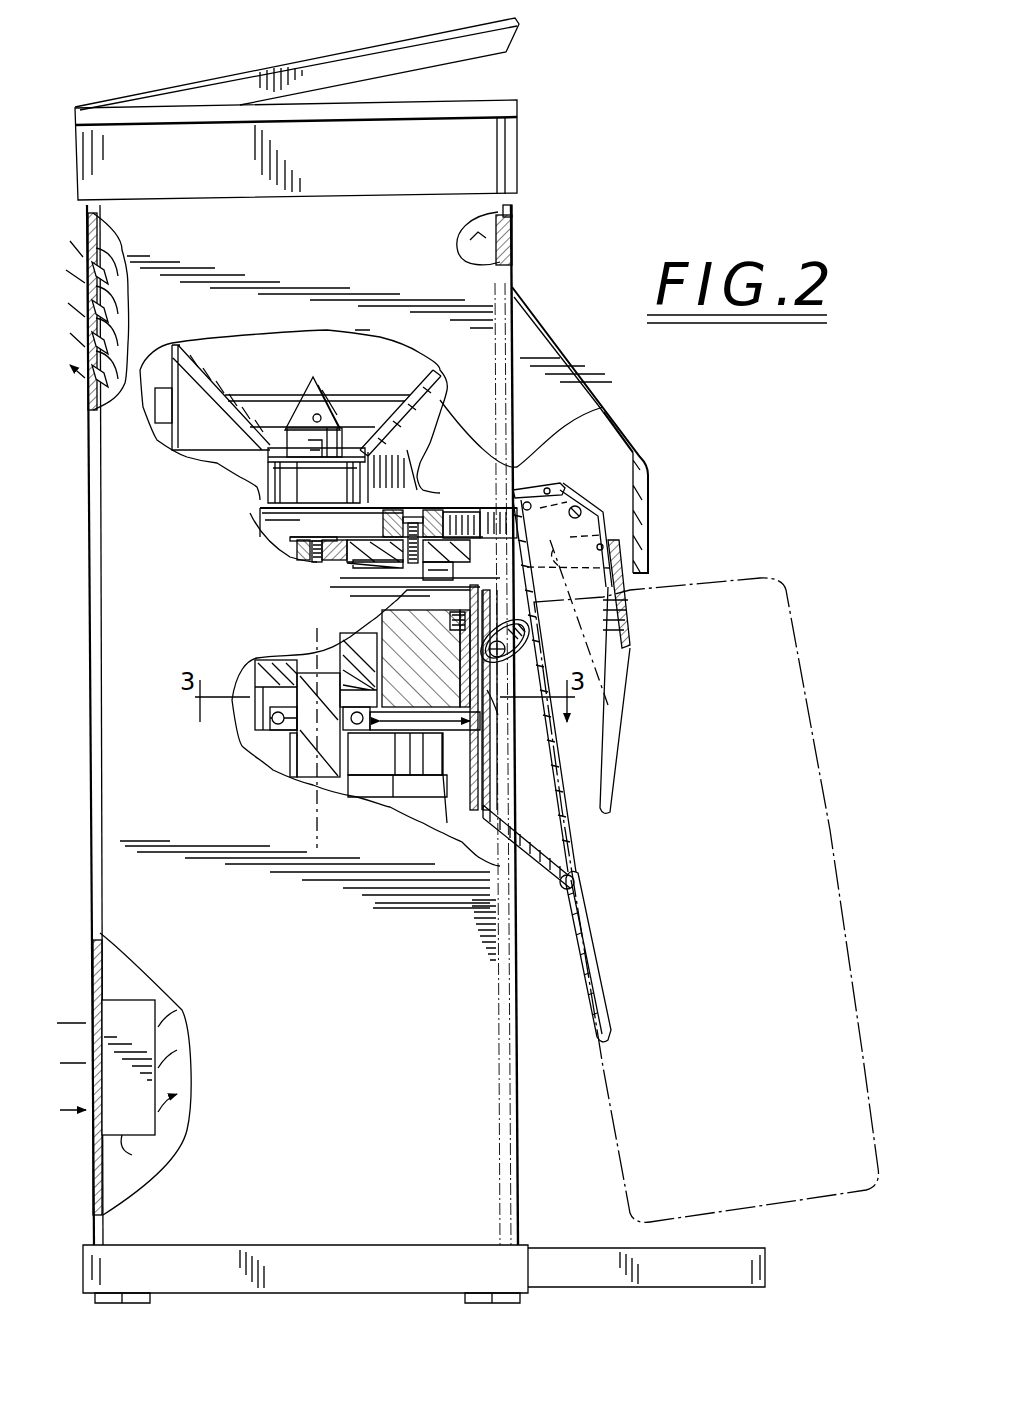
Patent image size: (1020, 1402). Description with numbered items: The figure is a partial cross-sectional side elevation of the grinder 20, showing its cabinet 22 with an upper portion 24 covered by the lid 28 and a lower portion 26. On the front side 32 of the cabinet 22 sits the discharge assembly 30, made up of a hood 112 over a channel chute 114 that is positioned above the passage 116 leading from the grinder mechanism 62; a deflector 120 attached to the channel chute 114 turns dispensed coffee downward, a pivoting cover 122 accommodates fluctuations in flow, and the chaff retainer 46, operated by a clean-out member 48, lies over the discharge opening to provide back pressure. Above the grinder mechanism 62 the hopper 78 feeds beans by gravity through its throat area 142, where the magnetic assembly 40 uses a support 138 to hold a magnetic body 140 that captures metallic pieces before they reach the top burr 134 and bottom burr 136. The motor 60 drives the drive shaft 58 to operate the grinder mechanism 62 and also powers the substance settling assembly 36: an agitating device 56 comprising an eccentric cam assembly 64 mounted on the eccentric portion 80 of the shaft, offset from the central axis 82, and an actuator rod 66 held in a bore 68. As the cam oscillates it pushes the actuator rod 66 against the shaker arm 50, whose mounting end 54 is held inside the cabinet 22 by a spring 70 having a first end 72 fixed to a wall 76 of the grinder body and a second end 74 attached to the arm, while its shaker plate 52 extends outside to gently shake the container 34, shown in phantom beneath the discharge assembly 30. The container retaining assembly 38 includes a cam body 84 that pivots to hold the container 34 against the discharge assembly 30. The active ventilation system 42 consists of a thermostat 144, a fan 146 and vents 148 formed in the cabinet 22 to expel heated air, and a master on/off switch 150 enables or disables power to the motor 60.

The grinder 20 is at (165, 72).
The cabinet 22 is at (84, 626).
The upper portion 24 is at (108, 213).
The lower portion 26 is at (112, 1230).
The lid 28 is at (292, 60).
The discharge assembly 30 is at (575, 352).
The front side 32 is at (515, 206).
The container or bag 34 is at (790, 602).
The substance settling assembly 36 is at (530, 898).
The container retaining assembly 38 is at (532, 650).
The magnetic assembly 40 is at (297, 355).
The active ventilation system 42 is at (88, 1000).
The chaff retainer 46 is at (535, 490).
The clean-out member 48 is at (569, 518).
The shaker arm 50 is at (575, 882).
The shaker plate 52 is at (585, 985).
The mounting end 54 is at (500, 766).
The agitating device 56 is at (366, 698).
The drive shaft 58 is at (310, 670).
The motor 60 is at (437, 805).
The grinder mechanism 62 is at (442, 455).
The eccentric cam assembly 64 is at (260, 722).
The actuator rod 66 is at (420, 777).
The bore 68 is at (382, 728).
The spring 70 is at (478, 640).
The first end 72 is at (455, 600).
The second end 74 is at (378, 568).
The wall 76 is at (505, 715).
The hopper 78 is at (437, 385).
The eccentric portion 80 is at (292, 740).
The central axis 82 is at (322, 825).
The cam body 84 is at (521, 633).
The hood 112 is at (625, 436).
The channel chute 114 is at (604, 756).
The passage 116 is at (497, 515).
The deflector 120 is at (600, 513).
The pivoting cover 122 is at (633, 612).
The top burr 134 is at (270, 526).
The bottom burr 136 is at (282, 548).
The support 138 is at (365, 397).
The magnetic body 140 is at (288, 440).
The throat area 142 is at (360, 470).
The thermostat 144 is at (175, 397).
The fan 146 is at (95, 1125).
The vents 148 is at (74, 325).
The master on/off switch 150 is at (515, 232).